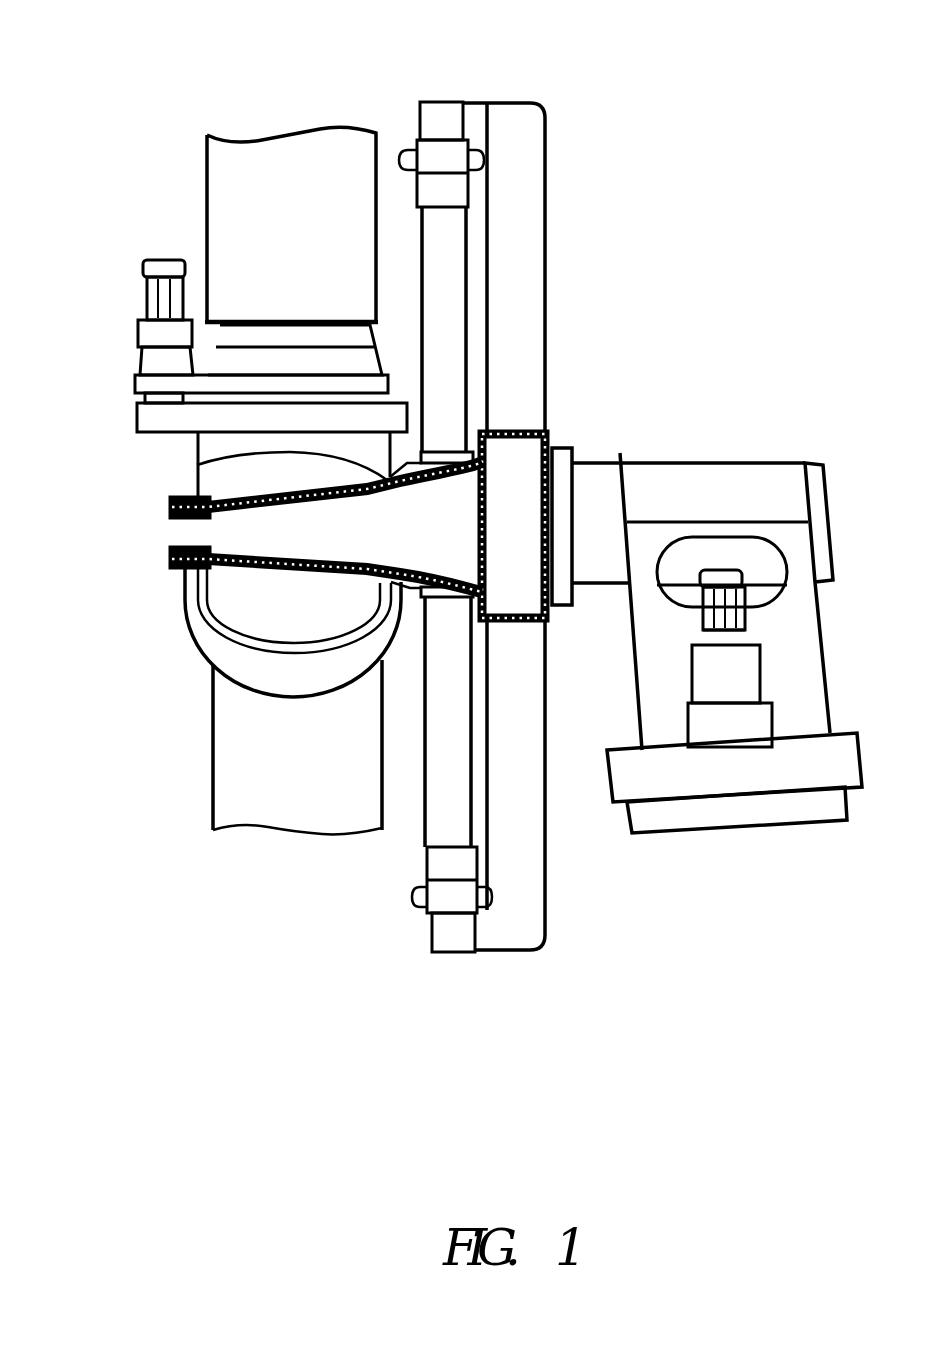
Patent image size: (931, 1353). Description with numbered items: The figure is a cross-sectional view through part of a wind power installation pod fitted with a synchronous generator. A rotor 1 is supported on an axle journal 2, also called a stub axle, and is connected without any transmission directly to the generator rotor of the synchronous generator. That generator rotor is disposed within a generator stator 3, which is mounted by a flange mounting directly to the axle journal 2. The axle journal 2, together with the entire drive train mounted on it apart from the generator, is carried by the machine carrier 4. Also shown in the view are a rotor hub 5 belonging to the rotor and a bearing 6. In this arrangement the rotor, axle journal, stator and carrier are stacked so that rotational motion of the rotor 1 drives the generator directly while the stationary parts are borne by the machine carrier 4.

The rotor 1 is at (458, 302).
The axle journal 2 is at (190, 530).
The generator stator 3 is at (442, 117).
The machine carrier 4 is at (707, 490).
The rotor hub 5 is at (197, 632).
The bearing 6 is at (167, 505).